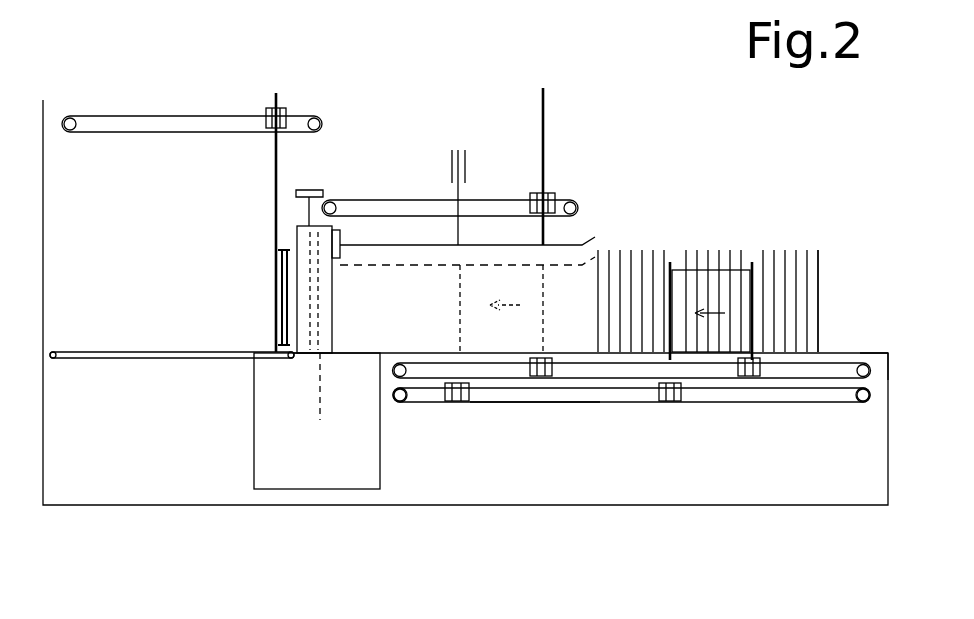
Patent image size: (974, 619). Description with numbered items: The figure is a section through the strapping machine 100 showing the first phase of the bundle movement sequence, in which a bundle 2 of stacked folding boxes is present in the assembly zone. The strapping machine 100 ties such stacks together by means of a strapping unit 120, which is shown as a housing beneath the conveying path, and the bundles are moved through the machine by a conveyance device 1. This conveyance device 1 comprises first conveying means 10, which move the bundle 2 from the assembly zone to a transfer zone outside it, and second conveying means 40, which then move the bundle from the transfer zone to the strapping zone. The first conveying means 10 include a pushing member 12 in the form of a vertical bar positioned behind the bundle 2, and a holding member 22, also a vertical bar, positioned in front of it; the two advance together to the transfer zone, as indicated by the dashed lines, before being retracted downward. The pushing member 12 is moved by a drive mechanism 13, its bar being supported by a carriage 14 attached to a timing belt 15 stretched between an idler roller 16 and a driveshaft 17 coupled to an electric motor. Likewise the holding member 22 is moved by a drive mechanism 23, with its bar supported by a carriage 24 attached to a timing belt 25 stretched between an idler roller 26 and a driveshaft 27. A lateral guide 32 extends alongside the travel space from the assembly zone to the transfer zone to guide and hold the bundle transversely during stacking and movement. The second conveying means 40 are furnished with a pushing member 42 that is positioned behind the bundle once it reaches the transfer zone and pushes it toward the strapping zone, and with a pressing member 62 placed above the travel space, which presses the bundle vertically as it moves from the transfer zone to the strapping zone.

The strapping machine 100 is at (112, 522).
The strapping unit 120 is at (254, 425).
The conveyance device 1 is at (362, 178).
The second conveying means 40 is at (590, 215).
The pressing member 62 is at (388, 245).
The pushing member 42 is at (543, 135).
The first conveying means 10 is at (826, 328).
The bundle 2 is at (716, 288).
The holding member 22 is at (668, 300).
The pushing member 12 is at (753, 290).
The lateral guide 32 is at (818, 272).
The driveshaft 17 is at (866, 353).
The drive mechanism 13 is at (878, 372).
The drive mechanism 23 is at (878, 397).
The timing belt 15 is at (540, 376).
The carriage 14 is at (748, 376).
The idler roller 16 is at (405, 372).
The carriage 24 is at (668, 401).
The idler roller 26 is at (400, 402).
The timing belt 25 is at (490, 402).
The driveshaft 27 is at (863, 402).